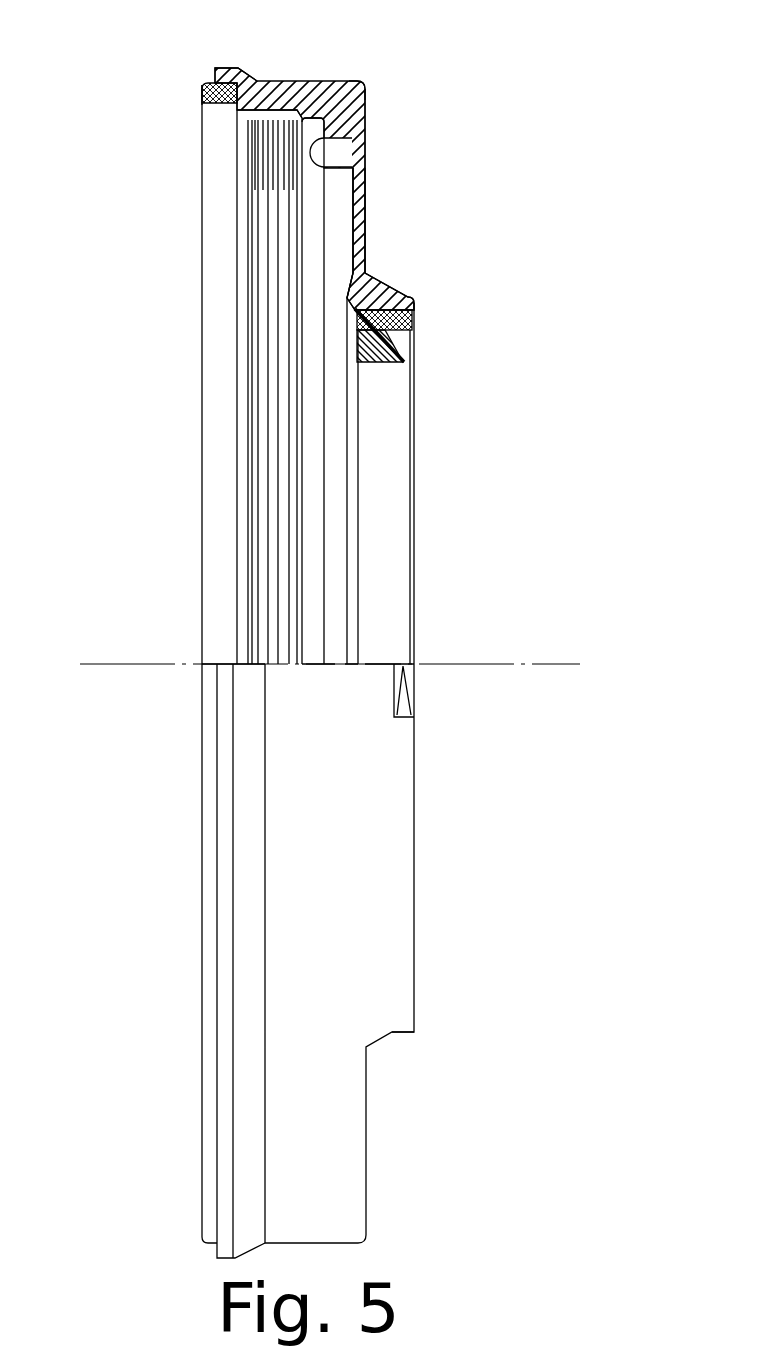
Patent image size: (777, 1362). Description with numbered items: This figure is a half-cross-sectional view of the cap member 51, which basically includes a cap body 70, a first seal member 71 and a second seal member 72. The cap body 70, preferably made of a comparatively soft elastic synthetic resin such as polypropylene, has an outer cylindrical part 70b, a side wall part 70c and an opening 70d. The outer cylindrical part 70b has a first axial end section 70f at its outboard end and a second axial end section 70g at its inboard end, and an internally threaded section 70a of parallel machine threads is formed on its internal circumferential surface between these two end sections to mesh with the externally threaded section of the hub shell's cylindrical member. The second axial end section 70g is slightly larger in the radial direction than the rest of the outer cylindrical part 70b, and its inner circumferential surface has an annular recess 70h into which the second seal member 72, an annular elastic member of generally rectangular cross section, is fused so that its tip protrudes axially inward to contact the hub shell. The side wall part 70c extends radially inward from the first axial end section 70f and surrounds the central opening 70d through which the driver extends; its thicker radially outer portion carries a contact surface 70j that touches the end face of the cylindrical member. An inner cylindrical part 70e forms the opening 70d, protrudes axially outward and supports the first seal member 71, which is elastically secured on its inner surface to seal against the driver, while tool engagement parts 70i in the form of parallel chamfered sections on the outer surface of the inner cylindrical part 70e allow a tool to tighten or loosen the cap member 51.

The cap member 51 is at (535, 247).
The cap body 70 is at (396, 221).
The internally threaded section 70a is at (268, 128).
The outer cylindrical part 70b is at (304, 81).
The side wall part 70c is at (363, 197).
The opening 70d is at (373, 350).
The inner cylindrical part 70e is at (407, 300).
The first axial end section 70f is at (358, 93).
The second axial end section 70g is at (232, 68).
The annular recess 70h is at (203, 93).
The tool engagement parts 70i is at (405, 698).
The contact surface 70j is at (340, 150).
The first seal member 71 is at (402, 326).
The second seal member 72 is at (213, 103).